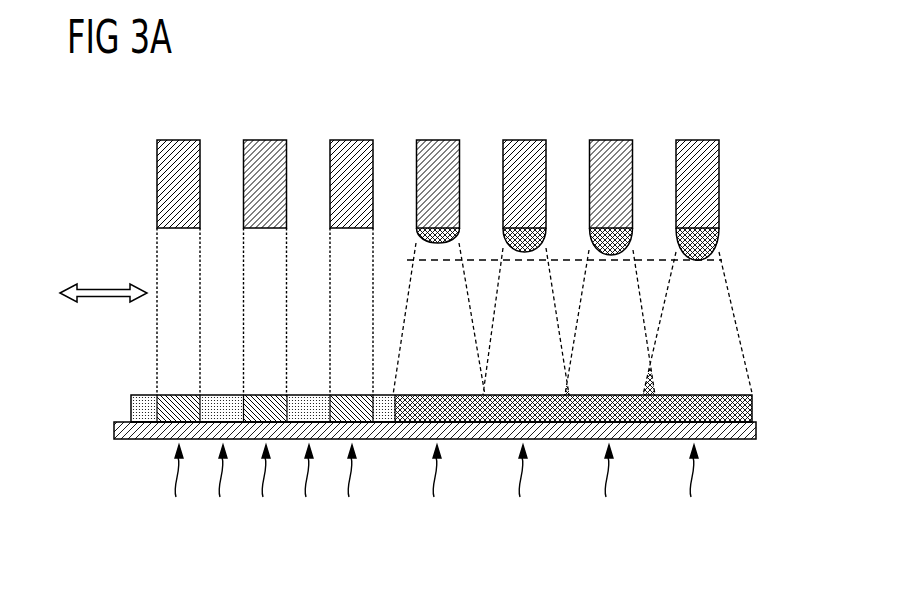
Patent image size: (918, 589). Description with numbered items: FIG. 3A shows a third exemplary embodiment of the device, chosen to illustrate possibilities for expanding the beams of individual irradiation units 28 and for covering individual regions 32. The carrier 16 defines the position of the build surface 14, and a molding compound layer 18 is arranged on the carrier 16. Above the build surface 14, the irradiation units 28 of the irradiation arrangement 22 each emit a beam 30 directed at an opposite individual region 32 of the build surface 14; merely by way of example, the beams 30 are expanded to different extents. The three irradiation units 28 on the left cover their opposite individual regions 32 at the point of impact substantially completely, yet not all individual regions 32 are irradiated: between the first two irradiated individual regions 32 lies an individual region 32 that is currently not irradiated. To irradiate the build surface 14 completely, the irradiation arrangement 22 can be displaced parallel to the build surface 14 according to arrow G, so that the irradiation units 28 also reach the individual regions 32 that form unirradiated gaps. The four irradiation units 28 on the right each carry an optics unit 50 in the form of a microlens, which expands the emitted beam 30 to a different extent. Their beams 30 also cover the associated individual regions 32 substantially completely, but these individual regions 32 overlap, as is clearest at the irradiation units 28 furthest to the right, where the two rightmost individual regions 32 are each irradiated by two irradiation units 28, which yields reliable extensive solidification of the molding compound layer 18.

The build surface 14 is at (772, 405).
The carrier 16 is at (757, 430).
The molding compound layer 18 is at (420, 422).
The irradiation arrangement 22 is at (598, 78).
The irradiation unit 28 is at (178, 147).
The beam 30 is at (183, 277).
The individual region 32 is at (436, 488).
The optics unit 50 is at (460, 238).
The arrow G is at (104, 288).